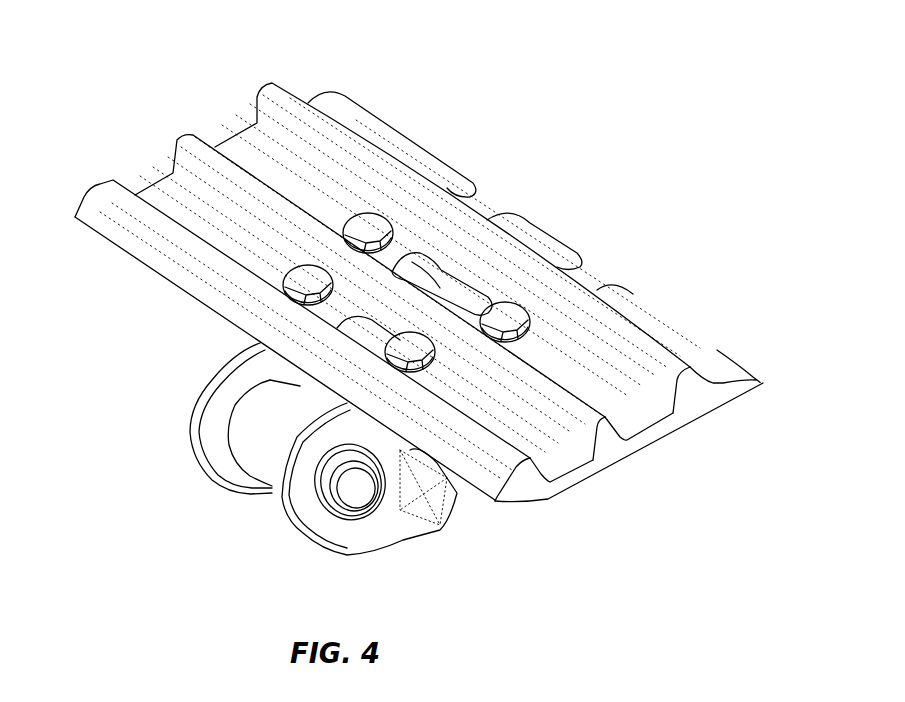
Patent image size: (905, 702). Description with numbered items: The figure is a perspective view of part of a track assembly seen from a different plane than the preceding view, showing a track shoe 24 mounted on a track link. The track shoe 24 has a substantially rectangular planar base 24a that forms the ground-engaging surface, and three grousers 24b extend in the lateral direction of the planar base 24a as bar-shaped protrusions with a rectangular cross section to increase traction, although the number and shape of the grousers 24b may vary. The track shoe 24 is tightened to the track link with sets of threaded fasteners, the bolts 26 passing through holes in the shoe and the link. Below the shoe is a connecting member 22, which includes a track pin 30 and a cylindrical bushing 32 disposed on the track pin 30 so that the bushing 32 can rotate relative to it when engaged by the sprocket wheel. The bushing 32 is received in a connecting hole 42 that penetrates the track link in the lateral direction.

The connecting member 22 is at (268, 457).
The track shoe 24 is at (396, 258).
The planar base 24a is at (603, 387).
The grouser 24b is at (113, 197).
The bolt 26 is at (367, 220).
The track pin 30 is at (358, 490).
The bushing 32 is at (338, 510).
The connecting hole 42 is at (332, 497).